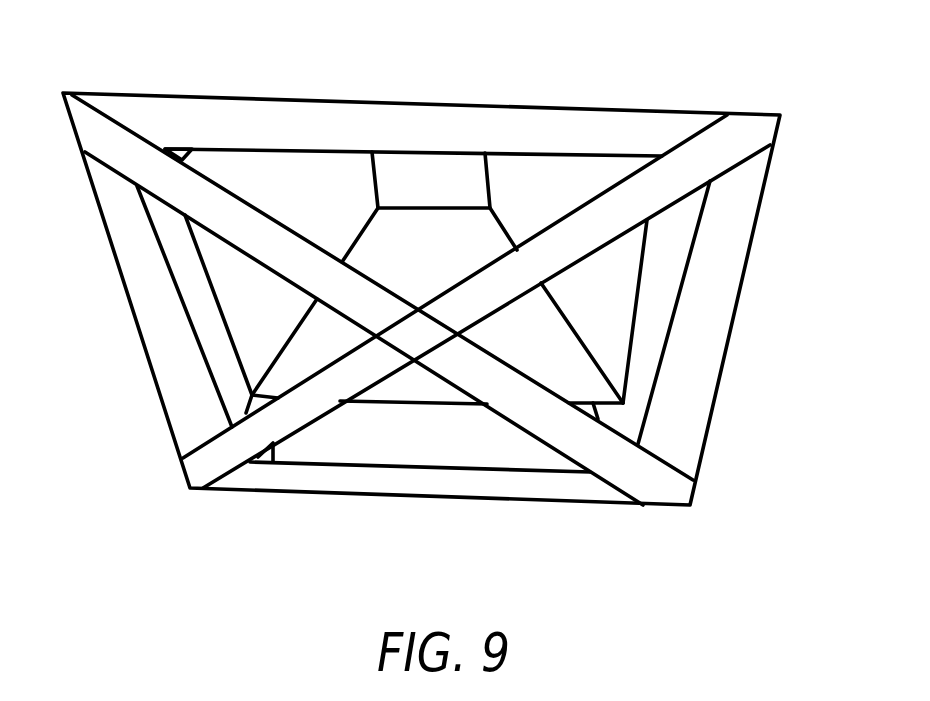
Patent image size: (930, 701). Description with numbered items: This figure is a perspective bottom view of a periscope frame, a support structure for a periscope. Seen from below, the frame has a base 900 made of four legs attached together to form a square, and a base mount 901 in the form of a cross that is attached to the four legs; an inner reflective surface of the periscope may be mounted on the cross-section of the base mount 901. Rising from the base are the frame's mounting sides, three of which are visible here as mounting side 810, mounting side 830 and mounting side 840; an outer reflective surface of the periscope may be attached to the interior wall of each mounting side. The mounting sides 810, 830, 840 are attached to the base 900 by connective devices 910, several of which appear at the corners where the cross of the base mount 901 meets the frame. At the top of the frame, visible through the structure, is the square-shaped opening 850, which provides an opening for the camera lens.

The base 900 is at (727, 230).
The base mount 901 is at (421, 300).
The connective device 910 is at (178, 147).
The mounting side 810 is at (591, 289).
The mounting side 830 is at (254, 284).
The mounting side 840 is at (437, 306).
The opening 850 is at (433, 175).